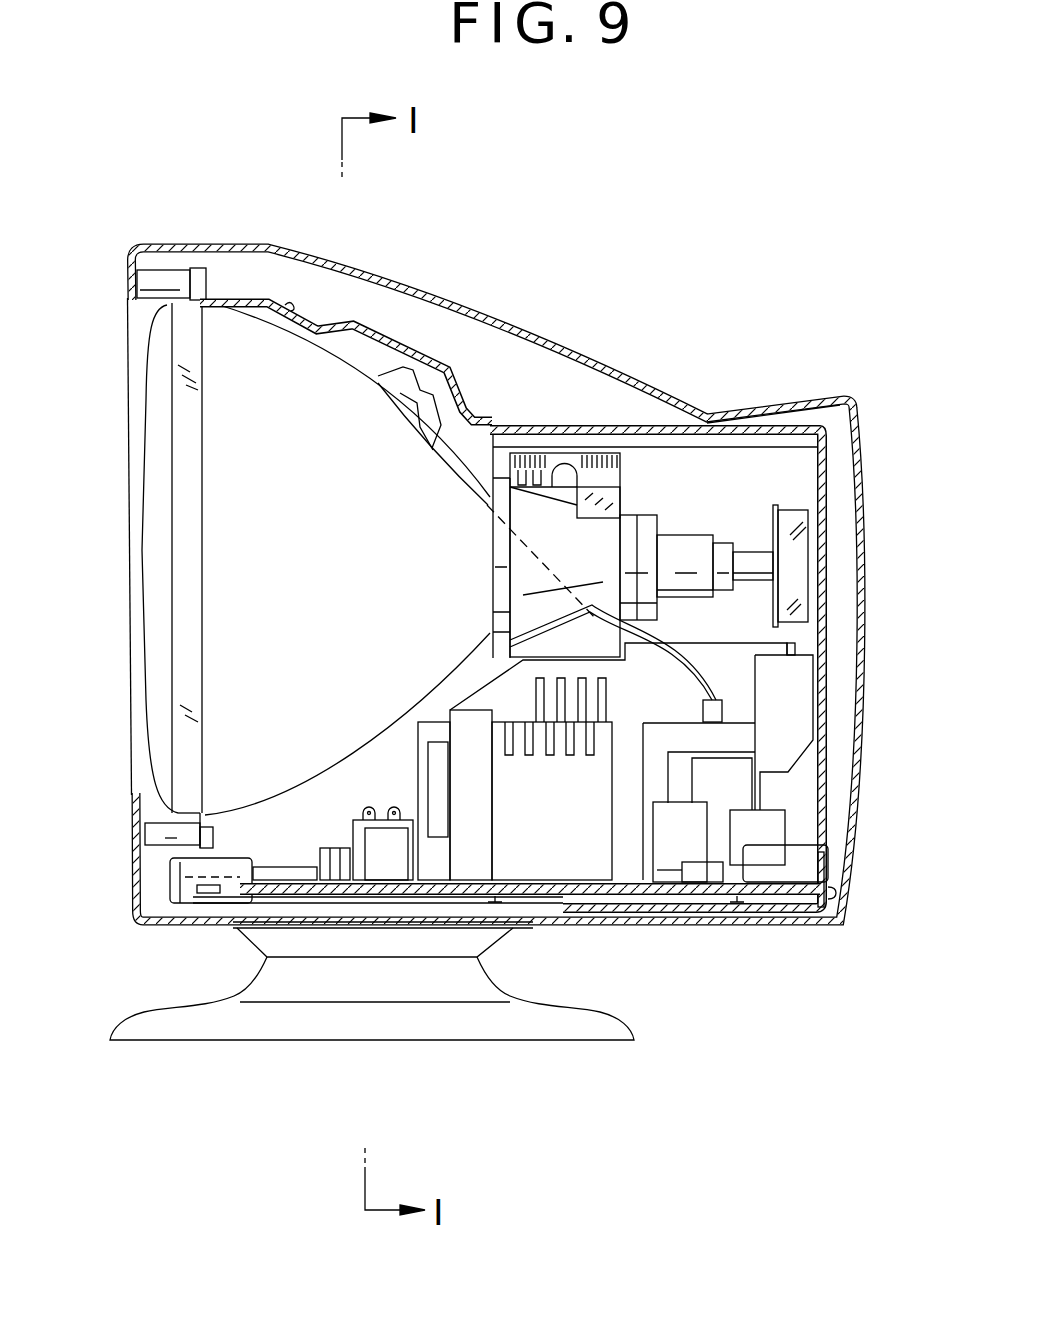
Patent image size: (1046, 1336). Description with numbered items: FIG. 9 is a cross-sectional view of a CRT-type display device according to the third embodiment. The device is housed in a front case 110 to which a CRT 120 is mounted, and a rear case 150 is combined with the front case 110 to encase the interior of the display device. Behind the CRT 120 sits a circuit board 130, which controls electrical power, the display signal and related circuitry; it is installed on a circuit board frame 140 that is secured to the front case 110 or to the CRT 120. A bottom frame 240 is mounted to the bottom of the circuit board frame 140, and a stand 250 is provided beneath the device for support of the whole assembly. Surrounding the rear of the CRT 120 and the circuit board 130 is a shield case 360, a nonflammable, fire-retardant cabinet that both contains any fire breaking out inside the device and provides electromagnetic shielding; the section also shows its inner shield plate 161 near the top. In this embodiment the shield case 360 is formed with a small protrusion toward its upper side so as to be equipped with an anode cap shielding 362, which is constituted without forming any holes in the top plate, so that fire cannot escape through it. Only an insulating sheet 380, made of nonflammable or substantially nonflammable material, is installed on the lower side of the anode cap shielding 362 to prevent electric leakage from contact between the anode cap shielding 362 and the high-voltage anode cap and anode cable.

The front case 110 is at (178, 243).
The CRT 120 is at (158, 549).
The circuit board 130 is at (765, 880).
The circuit board frame 140 is at (192, 868).
The rear case 150 is at (663, 375).
The inner shield plate 161 is at (628, 428).
The bottom frame 240 is at (745, 905).
The stand 250 is at (415, 1022).
The shield case 360 is at (788, 410).
The anode cap shielding 362 is at (410, 348).
The insulating sheet 380 is at (357, 321).